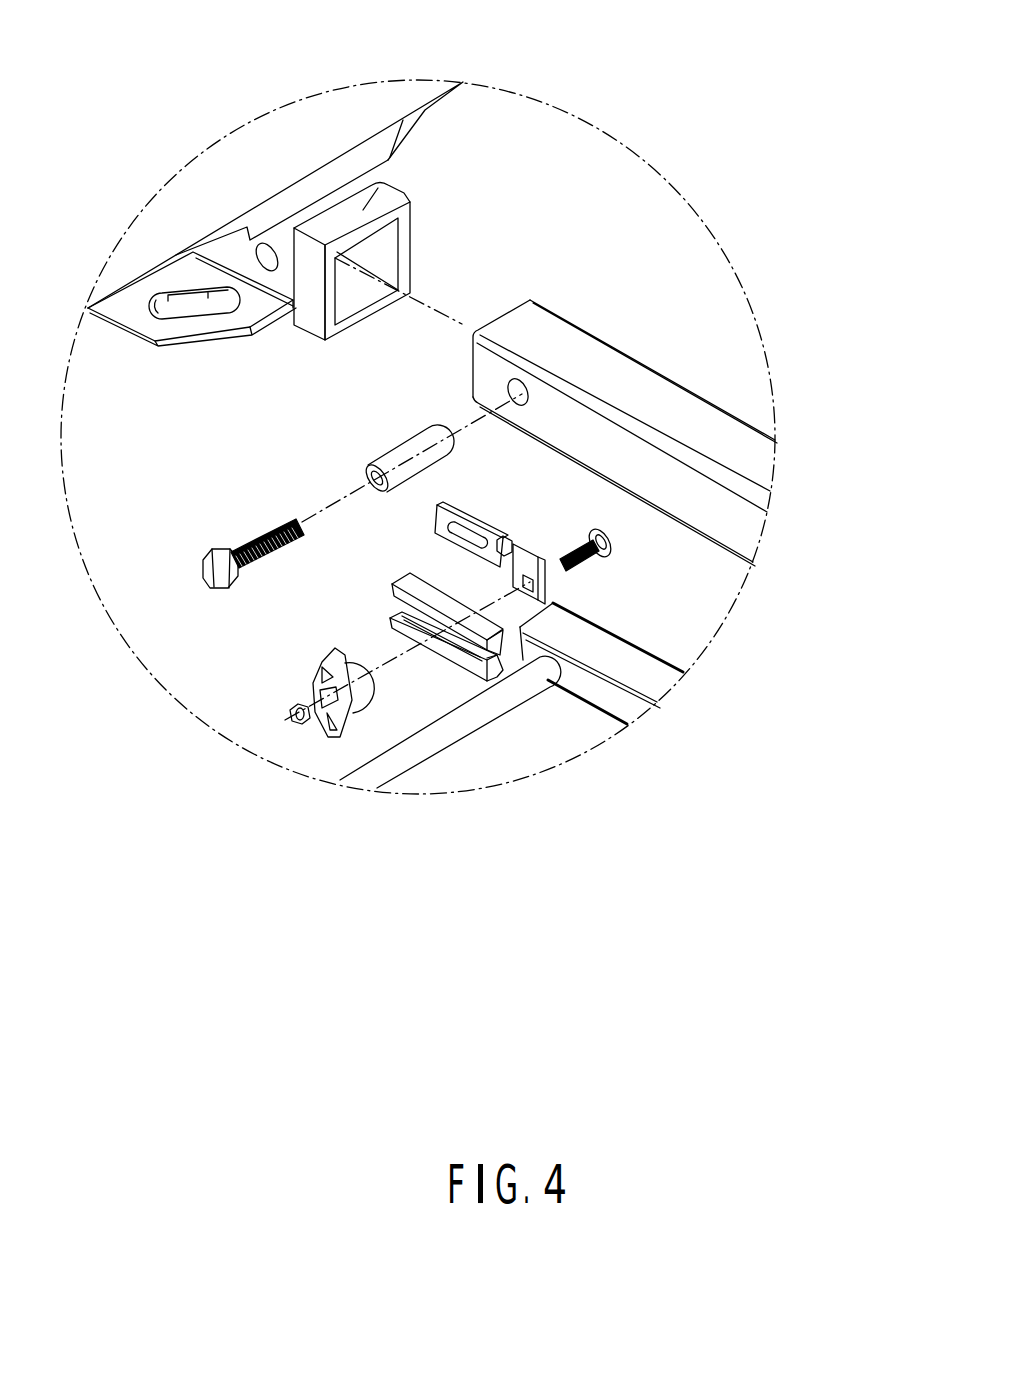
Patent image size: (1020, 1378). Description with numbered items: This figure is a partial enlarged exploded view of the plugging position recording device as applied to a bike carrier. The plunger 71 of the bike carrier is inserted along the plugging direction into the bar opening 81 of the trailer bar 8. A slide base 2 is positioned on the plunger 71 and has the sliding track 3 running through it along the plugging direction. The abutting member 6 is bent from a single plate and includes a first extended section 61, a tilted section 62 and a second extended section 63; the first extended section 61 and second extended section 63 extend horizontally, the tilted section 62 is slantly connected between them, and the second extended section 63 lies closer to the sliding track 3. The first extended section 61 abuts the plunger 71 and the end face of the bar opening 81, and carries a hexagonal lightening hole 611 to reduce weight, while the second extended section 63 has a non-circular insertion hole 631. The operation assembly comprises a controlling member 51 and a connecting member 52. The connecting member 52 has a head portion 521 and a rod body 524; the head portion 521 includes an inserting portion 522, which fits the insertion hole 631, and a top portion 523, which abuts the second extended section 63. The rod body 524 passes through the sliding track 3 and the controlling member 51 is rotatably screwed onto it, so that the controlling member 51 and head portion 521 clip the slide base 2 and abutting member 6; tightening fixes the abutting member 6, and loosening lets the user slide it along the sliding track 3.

The trailer bar 8 is at (463, 82).
The bar opening 81 is at (393, 234).
The plunger 71 is at (567, 338).
The abutting member 6 is at (478, 581).
The first extended section 61 is at (457, 513).
The lightening hole 611 is at (444, 541).
The tilted section 62 is at (505, 536).
The second extended section 63 is at (659, 613).
The insertion hole 631 is at (528, 600).
The slide base 2 is at (440, 647).
The sliding track 3 is at (374, 604).
The controlling member 51 is at (310, 748).
The connecting member 52 is at (562, 736).
The head portion 521 is at (632, 749).
The inserting portion 522 is at (603, 555).
The top portion 523 is at (612, 547).
The rod body 524 is at (582, 555).